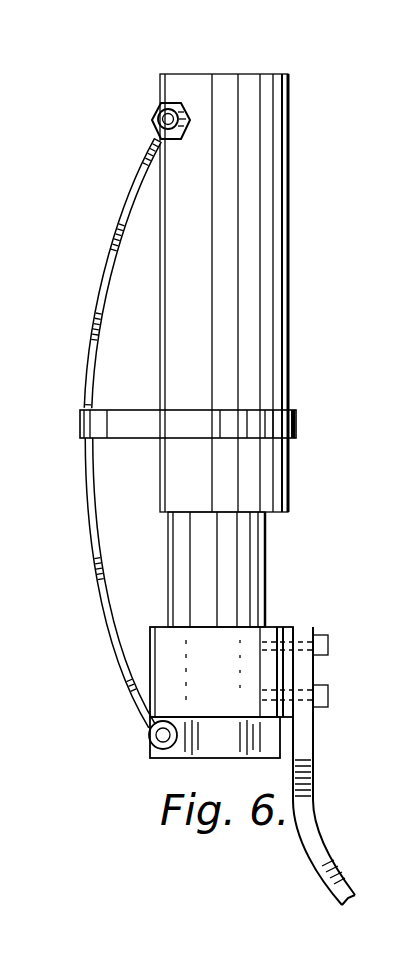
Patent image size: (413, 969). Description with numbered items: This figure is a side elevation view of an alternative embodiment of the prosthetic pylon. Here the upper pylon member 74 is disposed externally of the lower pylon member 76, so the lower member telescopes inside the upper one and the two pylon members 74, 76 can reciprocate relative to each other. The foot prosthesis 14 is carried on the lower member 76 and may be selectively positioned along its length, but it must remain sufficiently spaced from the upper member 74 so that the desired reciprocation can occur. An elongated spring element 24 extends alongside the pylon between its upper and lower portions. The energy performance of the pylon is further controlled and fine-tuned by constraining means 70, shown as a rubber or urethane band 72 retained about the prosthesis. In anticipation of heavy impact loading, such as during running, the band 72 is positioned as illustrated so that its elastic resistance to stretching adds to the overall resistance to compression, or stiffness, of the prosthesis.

The foot prosthesis 14 is at (325, 821).
The cable 24 is at (108, 258).
The constraining means 70 is at (79, 408).
The band 72 is at (273, 423).
The upper pylon member 74 is at (288, 263).
The lower pylon member 76 is at (265, 583).